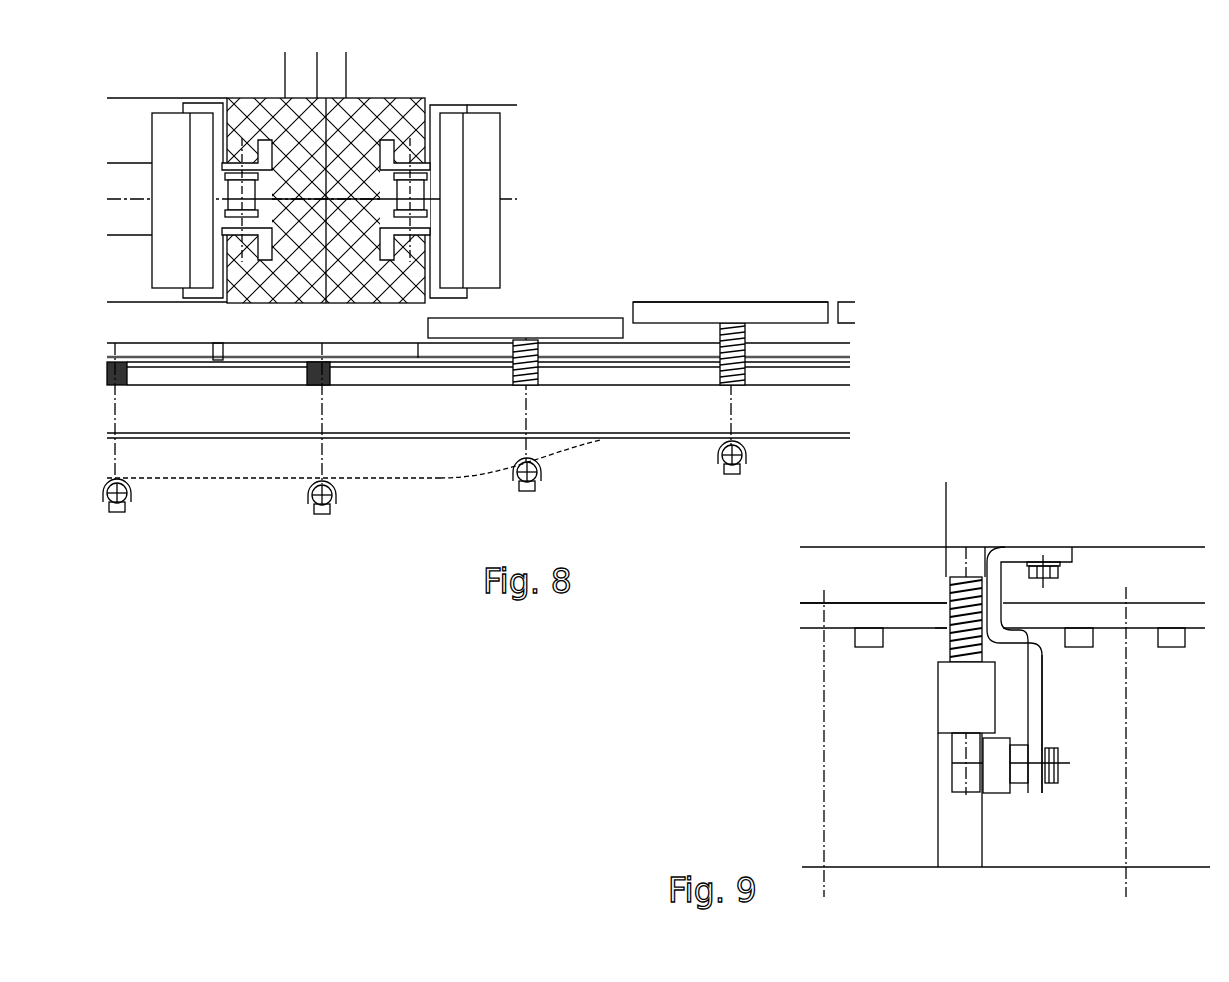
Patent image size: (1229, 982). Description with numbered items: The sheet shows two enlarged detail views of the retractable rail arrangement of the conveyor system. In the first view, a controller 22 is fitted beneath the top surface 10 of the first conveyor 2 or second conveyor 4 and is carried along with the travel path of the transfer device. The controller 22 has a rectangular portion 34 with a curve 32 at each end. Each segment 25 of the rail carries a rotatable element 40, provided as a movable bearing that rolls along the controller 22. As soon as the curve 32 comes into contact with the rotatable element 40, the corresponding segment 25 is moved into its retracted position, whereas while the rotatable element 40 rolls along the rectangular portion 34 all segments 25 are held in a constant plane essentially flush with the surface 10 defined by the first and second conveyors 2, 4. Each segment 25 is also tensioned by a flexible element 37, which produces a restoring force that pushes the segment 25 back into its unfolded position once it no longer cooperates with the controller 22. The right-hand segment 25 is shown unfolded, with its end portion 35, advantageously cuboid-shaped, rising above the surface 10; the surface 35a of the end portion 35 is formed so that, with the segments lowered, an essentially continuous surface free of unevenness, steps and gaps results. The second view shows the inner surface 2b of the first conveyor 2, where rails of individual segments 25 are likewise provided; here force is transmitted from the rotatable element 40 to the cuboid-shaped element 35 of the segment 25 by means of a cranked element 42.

In FIG. 8, the first conveyor 2 is at (843, 352).
In FIG. 9, the first conveyor 2 is at (847, 605).
In FIG. 8, the second conveyor 4 is at (488, 373).
In FIG. 8, the top surface 10 is at (820, 342).
In FIG. 8, the controller 22 is at (370, 482).
In FIG. 8, the segment 25 is at (293, 358).
In FIG. 9, the segment 25 is at (947, 518).
In FIG. 8, the curve 32 is at (547, 448).
In FIG. 8, the rectangular portion 34 is at (247, 457).
In FIG. 8, the end portion 35 is at (692, 312).
In FIG. 9, the end portion 35 is at (993, 523).
In FIG. 8, the surface 35a is at (755, 302).
In FIG. 8, the flexible element 37 is at (745, 370).
In FIG. 9, the flexible element 37 is at (950, 645).
In FIG. 8, the rotatable element 40 is at (537, 483).
In FIG. 9, the rotatable element 40 is at (1000, 780).
In FIG. 9, the cranked element 42 is at (1030, 687).
In FIG. 9, the inner surface 2b is at (947, 622).